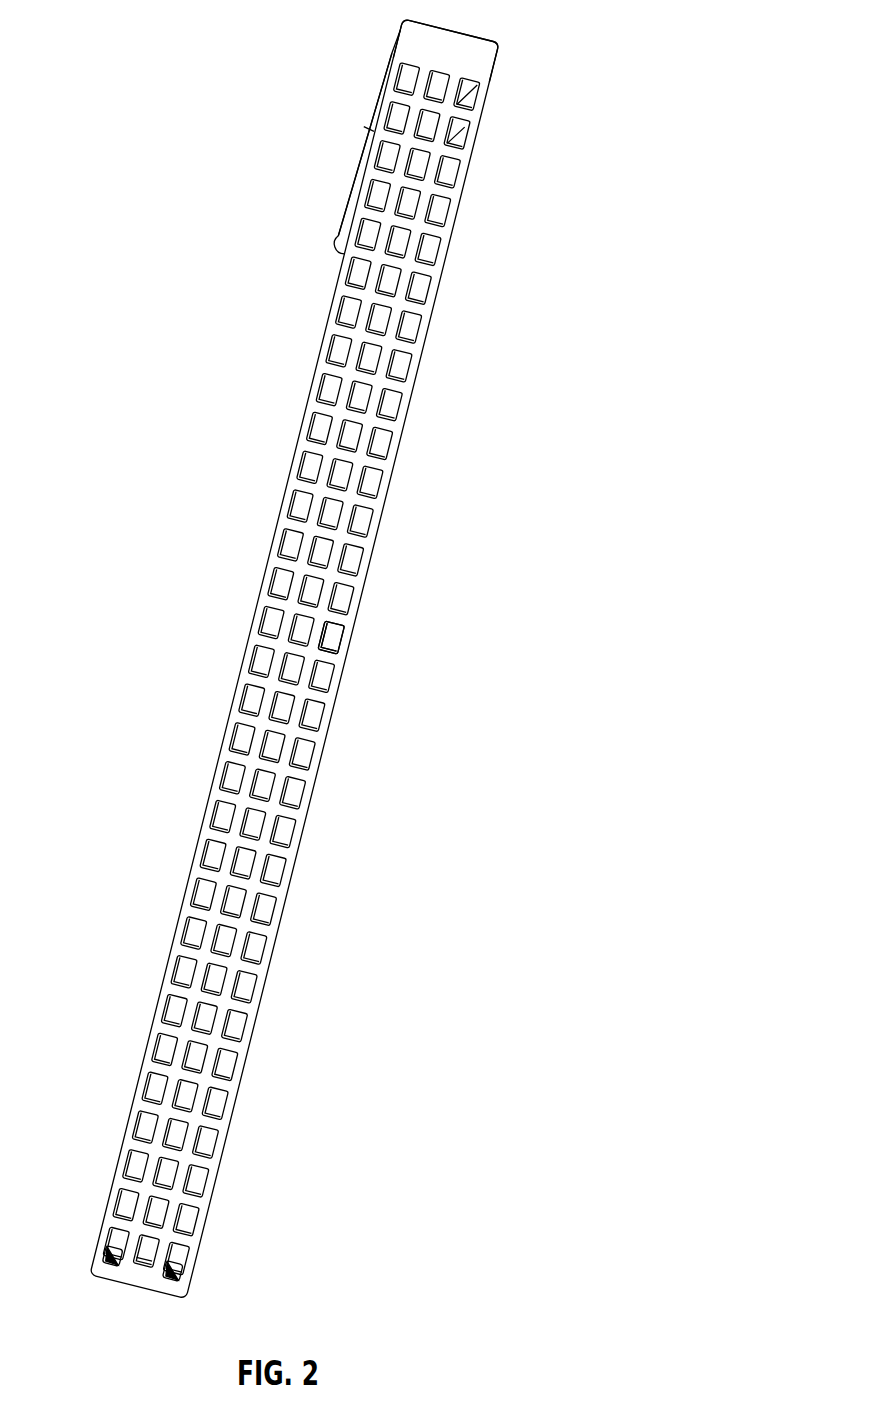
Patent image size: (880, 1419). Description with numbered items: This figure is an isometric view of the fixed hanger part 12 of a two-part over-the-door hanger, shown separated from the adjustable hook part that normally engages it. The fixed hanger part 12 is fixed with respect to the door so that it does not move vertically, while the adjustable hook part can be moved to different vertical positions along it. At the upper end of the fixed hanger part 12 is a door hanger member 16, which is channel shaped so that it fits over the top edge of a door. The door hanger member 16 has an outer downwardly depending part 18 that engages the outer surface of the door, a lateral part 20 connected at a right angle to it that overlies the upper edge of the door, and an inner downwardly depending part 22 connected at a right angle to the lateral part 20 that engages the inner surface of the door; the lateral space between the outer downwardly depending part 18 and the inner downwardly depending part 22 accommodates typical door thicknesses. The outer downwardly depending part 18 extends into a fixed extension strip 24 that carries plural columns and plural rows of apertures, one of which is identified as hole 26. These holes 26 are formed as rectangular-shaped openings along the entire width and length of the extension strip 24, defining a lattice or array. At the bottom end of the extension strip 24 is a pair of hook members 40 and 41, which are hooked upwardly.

The fixed hanger part 12 is at (288, 657).
The door hanger member 16 is at (368, 129).
The outer downwardly depending part 18 is at (446, 50).
The lateral part 20 is at (366, 141).
The inner downwardly depending part 22 is at (365, 144).
The fixed extension strip 24 is at (294, 659).
The hole 26 is at (331, 637).
The hook member 40 is at (112, 1256).
The hook member 41 is at (172, 1271).